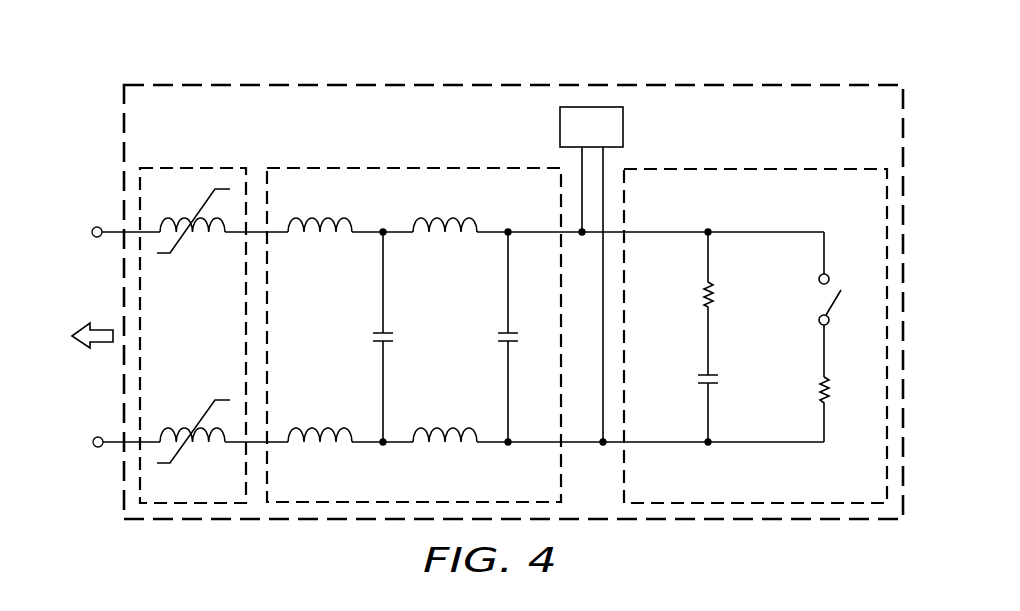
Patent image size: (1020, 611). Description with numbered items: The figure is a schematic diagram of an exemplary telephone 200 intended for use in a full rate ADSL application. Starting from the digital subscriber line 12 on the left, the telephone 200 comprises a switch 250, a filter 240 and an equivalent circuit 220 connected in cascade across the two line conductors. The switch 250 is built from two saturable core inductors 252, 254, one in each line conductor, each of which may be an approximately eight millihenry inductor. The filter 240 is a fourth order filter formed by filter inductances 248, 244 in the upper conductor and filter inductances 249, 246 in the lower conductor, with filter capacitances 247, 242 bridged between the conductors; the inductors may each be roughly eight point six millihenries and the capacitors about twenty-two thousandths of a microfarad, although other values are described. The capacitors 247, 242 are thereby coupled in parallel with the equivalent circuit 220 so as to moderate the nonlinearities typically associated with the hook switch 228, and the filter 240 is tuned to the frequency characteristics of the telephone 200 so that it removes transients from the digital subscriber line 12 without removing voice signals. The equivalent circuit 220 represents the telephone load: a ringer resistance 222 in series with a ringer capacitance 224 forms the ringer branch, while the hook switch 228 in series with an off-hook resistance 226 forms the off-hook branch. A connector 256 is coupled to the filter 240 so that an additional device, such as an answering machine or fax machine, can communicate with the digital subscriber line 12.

The telephone 200 is at (806, 84).
The digital subscriber line 12 is at (78, 339).
The switch 250 is at (228, 488).
The filter 240 is at (402, 210).
The equivalent circuit 220 is at (775, 213).
The saturable core inductor 252 is at (196, 237).
The saturable core inductor 254 is at (192, 420).
The filter inductance 248 is at (331, 240).
The filter inductance 244 is at (457, 240).
The filter inductance 249 is at (332, 448).
The filter inductance 246 is at (458, 448).
The filter capacitance 247 is at (372, 337).
The filter capacitance 242 is at (497, 337).
The connector 256 is at (560, 128).
The ringing resistor RR 222 is at (701, 292).
The ringing capacitor CR 224 is at (698, 381).
The hook switch 228 is at (820, 302).
The off-hook resistor ROH 226 is at (819, 392).